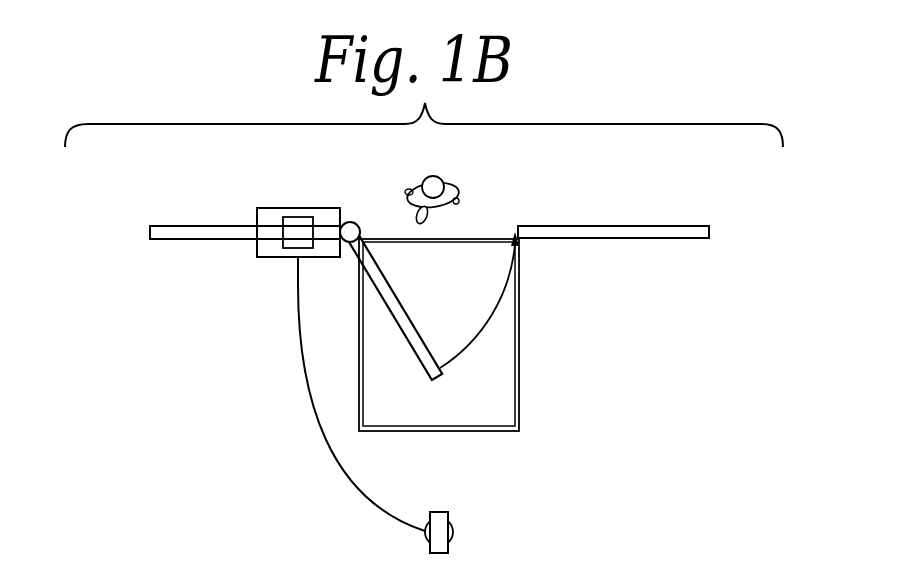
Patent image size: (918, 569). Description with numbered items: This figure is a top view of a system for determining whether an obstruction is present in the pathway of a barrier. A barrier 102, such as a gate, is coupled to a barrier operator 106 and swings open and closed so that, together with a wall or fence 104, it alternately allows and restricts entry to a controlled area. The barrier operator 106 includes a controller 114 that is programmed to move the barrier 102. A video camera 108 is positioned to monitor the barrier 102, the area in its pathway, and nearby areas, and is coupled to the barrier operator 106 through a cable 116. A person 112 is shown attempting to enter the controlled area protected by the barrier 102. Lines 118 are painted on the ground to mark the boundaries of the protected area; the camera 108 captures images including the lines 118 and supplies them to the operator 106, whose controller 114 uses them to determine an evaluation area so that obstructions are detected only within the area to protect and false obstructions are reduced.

The barrier 102 is at (403, 337).
The wall or fence 104 is at (217, 226).
The barrier operator 106 is at (293, 208).
The video camera 108 is at (449, 532).
The person 112 is at (458, 190).
The controller 114 is at (283, 248).
The cable 116 is at (345, 477).
The lines 118 is at (520, 320).